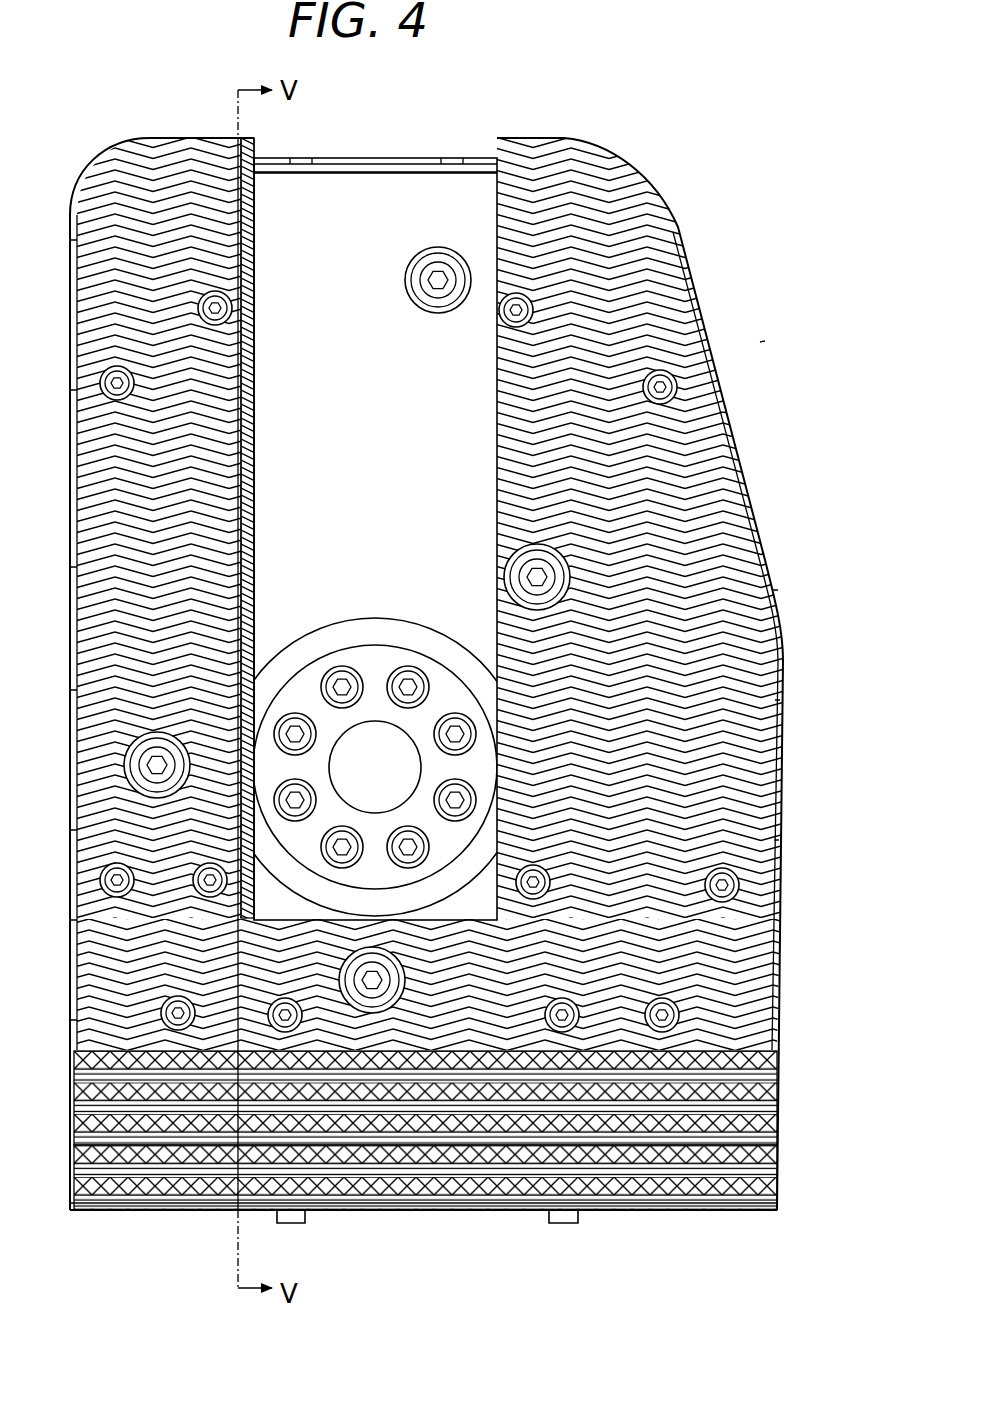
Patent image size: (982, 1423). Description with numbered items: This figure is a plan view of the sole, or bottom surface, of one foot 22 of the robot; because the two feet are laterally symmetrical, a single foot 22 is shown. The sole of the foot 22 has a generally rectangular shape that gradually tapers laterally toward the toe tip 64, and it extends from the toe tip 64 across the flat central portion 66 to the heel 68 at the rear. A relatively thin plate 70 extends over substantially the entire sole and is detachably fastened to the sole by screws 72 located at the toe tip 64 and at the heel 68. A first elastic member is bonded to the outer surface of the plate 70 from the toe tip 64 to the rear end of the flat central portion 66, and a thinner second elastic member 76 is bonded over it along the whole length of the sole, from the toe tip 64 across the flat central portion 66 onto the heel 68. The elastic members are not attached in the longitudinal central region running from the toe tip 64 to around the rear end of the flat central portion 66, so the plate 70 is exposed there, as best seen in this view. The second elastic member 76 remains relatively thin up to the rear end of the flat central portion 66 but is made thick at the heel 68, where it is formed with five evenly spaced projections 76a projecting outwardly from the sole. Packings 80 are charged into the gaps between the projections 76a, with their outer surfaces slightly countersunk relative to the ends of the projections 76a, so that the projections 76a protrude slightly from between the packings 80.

The foot 22 is at (645, 158).
The toe tip 64 is at (360, 158).
The flat central portion 66 is at (794, 708).
The heel 68 is at (691, 1217).
The plate 70 is at (387, 458).
The screws 72 is at (563, 1224).
The second elastic member 76 is at (752, 862).
The projections 76a is at (777, 1147).
The packings 80 is at (777, 1053).